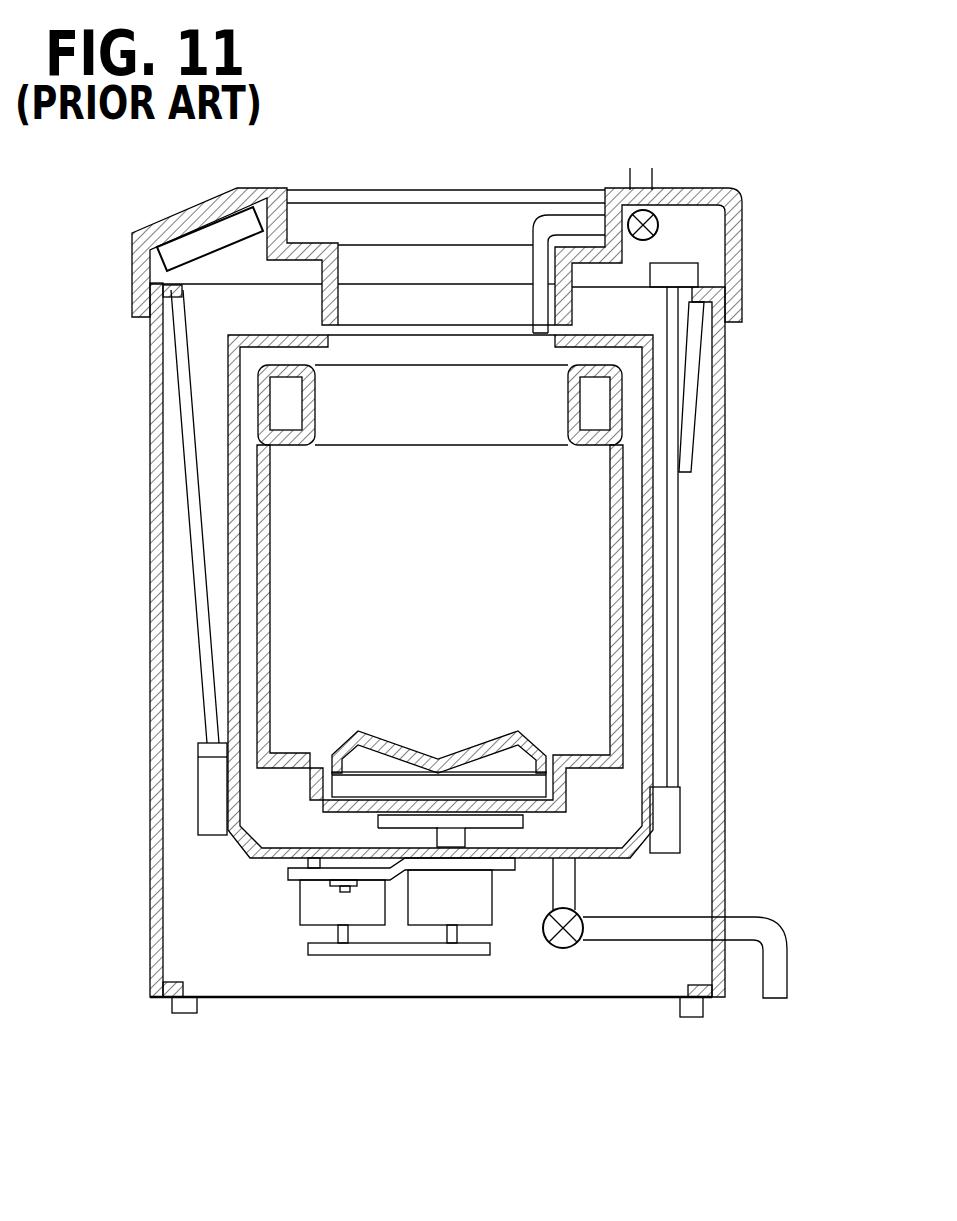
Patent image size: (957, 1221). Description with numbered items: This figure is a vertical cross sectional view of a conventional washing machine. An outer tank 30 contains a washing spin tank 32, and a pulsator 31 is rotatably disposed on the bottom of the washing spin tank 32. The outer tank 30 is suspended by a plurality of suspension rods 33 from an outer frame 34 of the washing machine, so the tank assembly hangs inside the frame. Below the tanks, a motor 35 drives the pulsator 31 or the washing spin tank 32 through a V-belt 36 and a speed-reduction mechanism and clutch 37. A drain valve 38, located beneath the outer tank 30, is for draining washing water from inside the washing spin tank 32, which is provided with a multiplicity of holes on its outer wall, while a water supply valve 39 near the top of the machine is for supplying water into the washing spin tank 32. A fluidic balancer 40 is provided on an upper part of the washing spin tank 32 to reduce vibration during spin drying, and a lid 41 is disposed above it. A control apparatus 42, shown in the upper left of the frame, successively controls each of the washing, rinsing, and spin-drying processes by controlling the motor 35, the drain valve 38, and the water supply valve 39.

The outer tank 30 is at (225, 727).
The pulsator 31 is at (520, 765).
The washing spin tank 32 is at (250, 672).
The suspension rods 33 is at (187, 533).
The outer frame 34 is at (148, 437).
The motor 35 is at (298, 907).
The V-belt 36 is at (335, 957).
The speed-reduction mechanism and clutch 37 is at (490, 928).
The drain valve 38 is at (565, 948).
The water supply valve 39 is at (660, 228).
The fluidic balancer 40 is at (623, 412).
The lid 41 is at (462, 188).
The control apparatus 42 is at (197, 240).